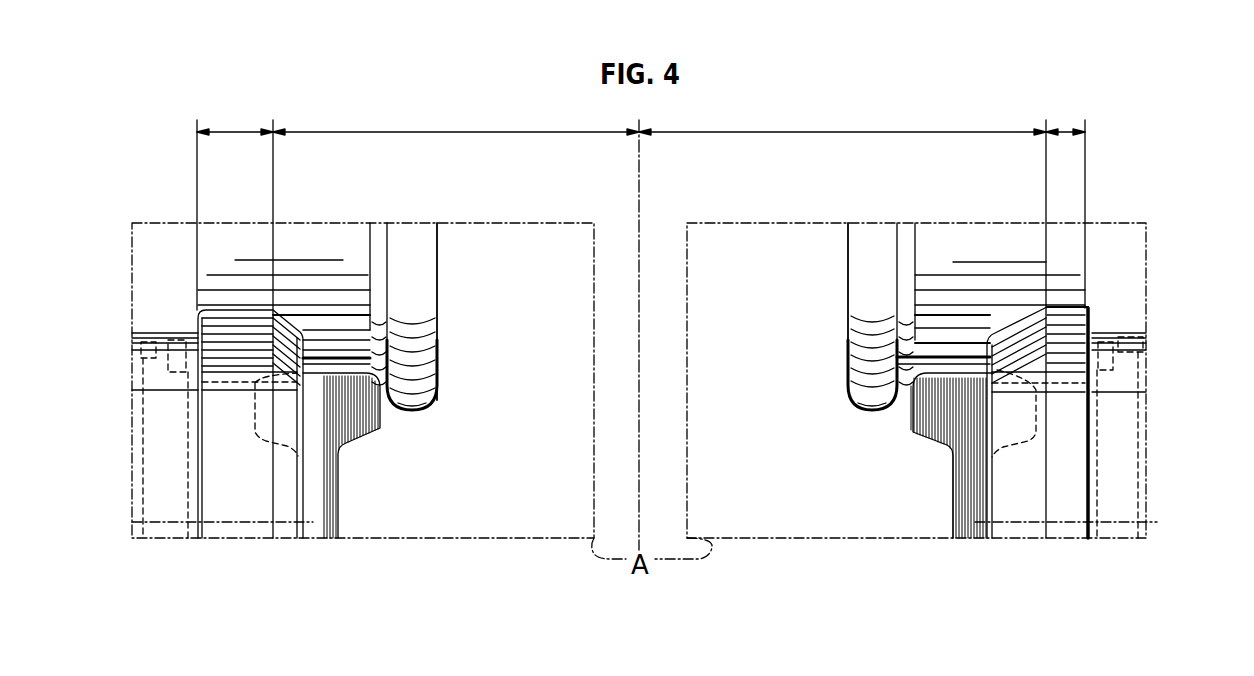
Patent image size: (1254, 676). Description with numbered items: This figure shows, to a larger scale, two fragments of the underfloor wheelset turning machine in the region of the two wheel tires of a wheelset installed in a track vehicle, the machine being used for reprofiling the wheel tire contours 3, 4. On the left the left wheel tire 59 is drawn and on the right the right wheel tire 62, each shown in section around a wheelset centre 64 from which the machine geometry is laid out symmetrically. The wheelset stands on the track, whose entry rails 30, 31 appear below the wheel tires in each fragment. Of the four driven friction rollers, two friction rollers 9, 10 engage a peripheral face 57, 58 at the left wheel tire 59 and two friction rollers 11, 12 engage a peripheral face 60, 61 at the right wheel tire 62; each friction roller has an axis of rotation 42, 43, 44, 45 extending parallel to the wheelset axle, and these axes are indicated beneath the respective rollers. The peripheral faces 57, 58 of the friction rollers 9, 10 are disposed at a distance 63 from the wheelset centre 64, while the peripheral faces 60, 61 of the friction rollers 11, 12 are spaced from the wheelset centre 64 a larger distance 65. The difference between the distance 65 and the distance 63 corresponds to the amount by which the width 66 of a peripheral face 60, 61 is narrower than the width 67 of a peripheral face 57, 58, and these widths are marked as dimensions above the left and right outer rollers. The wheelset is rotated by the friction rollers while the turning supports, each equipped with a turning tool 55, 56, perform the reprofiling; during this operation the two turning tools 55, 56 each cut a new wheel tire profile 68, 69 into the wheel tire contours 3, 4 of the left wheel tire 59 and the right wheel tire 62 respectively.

The wheel tire contour 3 is at (436, 400).
The wheel tire contour 4 is at (848, 398).
The friction roller 9 is at (288, 320).
The friction roller 10 is at (310, 308).
The friction roller 11 is at (1032, 312).
The friction roller 12 is at (1000, 384).
The entry rail 30 is at (363, 432).
The entry rail 31 is at (913, 423).
The axis of rotation 42 is at (213, 522).
The axis of rotation 43 is at (222, 474).
The axis of rotation 44 is at (1032, 523).
The axis of rotation 45 is at (1066, 475).
The turning tool 55 is at (164, 342).
The turning tool 56 is at (1117, 343).
The peripheral face 57 is at (238, 323).
The peripheral face 58 is at (250, 384).
The left wheel tire 59 is at (437, 266).
The peripheral face 60 is at (1068, 323).
The peripheral face 61 is at (1106, 417).
The right wheel tire 62 is at (855, 279).
The distance 63 is at (464, 130).
The wheelset centre 64 is at (643, 182).
The distance 65 is at (848, 130).
The width 66 is at (1068, 130).
The width 67 is at (232, 130).
The wheel tire profile 68 is at (412, 410).
The wheel tire profile 69 is at (872, 410).